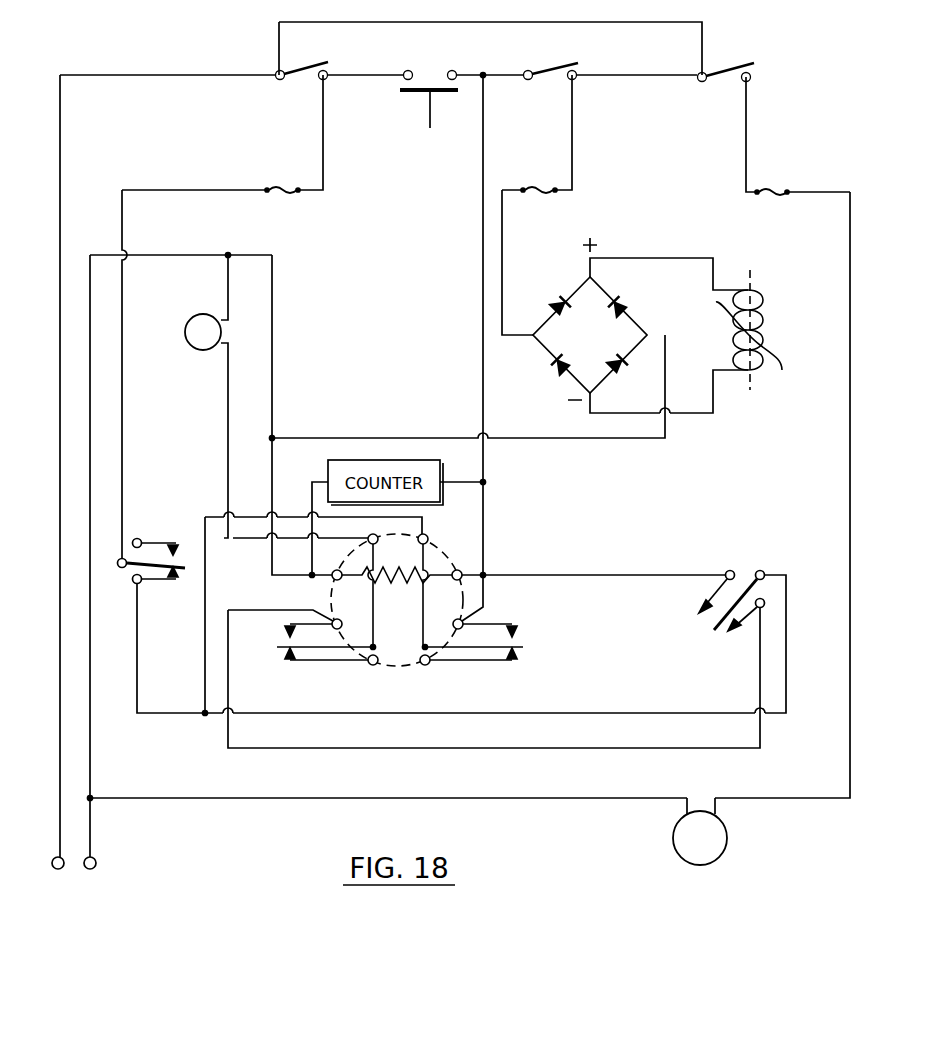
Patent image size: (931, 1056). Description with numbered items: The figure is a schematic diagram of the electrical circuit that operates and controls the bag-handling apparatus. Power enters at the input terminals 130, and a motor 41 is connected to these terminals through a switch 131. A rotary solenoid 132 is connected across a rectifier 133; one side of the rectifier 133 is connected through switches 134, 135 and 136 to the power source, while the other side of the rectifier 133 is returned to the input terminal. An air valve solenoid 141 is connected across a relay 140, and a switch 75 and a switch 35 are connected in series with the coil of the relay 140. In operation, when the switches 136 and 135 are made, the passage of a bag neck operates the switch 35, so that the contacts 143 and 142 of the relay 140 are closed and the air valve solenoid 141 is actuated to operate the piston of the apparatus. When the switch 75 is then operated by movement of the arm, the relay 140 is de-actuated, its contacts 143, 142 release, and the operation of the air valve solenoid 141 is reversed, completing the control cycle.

The switch 136 is at (296, 80).
The switch 135 is at (430, 81).
The switch 134 is at (546, 78).
The switch 131 is at (724, 78).
The rectifier 133 is at (542, 306).
The rotary solenoid 132 is at (766, 315).
The air valve solenoid 141 is at (192, 326).
The switch 75 is at (158, 537).
The relay 140 is at (449, 550).
The contacts 143 is at (273, 653).
The contacts 142 is at (534, 648).
The switch 35 is at (699, 625).
The motor 41 is at (678, 859).
The input terminals 130 is at (76, 882).